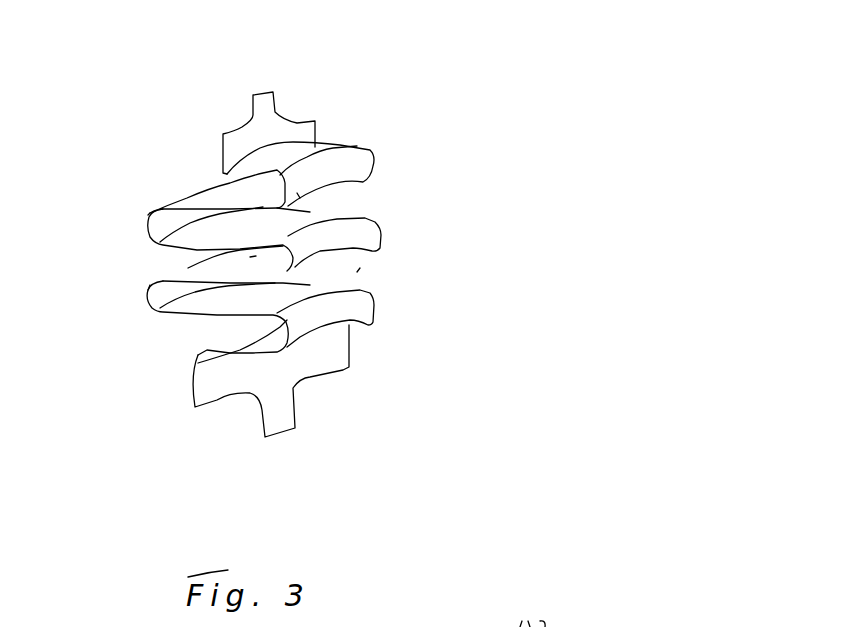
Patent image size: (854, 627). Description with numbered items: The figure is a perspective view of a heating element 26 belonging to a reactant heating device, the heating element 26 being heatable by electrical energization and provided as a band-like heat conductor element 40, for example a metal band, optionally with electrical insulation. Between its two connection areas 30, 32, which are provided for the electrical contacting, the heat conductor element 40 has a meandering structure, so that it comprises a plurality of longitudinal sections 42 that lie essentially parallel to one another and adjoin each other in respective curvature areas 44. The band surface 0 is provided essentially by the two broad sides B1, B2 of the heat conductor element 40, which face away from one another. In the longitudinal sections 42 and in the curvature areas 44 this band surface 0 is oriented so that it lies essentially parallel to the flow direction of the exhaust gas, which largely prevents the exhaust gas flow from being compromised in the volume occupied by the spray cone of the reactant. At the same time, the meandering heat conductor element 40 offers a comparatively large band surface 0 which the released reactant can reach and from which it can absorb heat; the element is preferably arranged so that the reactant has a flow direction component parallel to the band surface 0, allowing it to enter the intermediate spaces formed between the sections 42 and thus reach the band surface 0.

The heating element 26 is at (530, 4).
The connection area 30 is at (240, 128).
The connection area 32 is at (297, 405).
The heat conductor element 40 is at (227, 400).
The longitudinal sections 42 is at (522, 191).
The curvature areas 44 is at (518, 313).
The band surface 0 is at (310, 285).
The broad side B1 is at (303, 202).
The broad side B2 is at (253, 257).